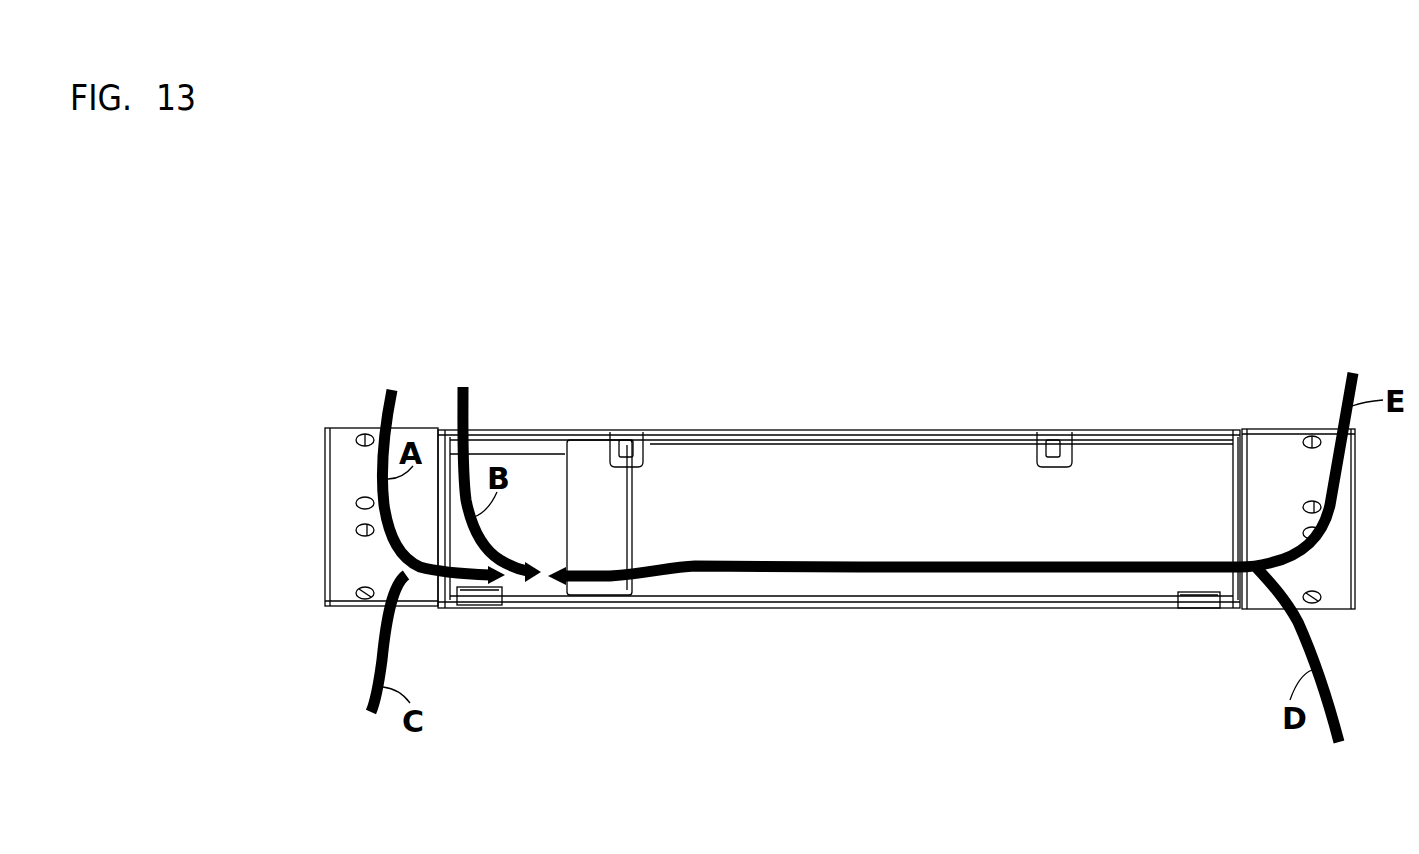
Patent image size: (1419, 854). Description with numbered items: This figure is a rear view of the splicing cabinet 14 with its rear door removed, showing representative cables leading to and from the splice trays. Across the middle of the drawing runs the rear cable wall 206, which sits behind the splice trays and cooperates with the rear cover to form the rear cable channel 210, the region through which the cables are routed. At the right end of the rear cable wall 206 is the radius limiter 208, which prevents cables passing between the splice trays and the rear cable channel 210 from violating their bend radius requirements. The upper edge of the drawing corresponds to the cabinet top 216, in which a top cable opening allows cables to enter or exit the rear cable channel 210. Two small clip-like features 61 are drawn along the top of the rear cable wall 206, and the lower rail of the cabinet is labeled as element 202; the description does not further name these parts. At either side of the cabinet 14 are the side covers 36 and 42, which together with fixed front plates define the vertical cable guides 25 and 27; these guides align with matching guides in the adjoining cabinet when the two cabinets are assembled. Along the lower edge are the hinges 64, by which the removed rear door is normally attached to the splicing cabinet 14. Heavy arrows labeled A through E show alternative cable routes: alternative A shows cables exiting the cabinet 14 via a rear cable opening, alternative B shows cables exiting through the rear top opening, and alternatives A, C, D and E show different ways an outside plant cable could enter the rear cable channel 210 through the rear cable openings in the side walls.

The splicing cabinet 14 is at (938, 365).
The vertical cable guide 25 is at (341, 616).
The vertical cable guide 27 is at (1324, 412).
The side cover 36 is at (350, 440).
The side cover 42 is at (1271, 450).
The cable clip 61 is at (626, 452).
The hinge 64 is at (484, 600).
The base 202 is at (858, 604).
The rear cable wall 206 is at (843, 466).
The radius limiter 208 is at (584, 470).
The rear cable channel 210 is at (970, 528).
The cabinet top 216 is at (1146, 432).